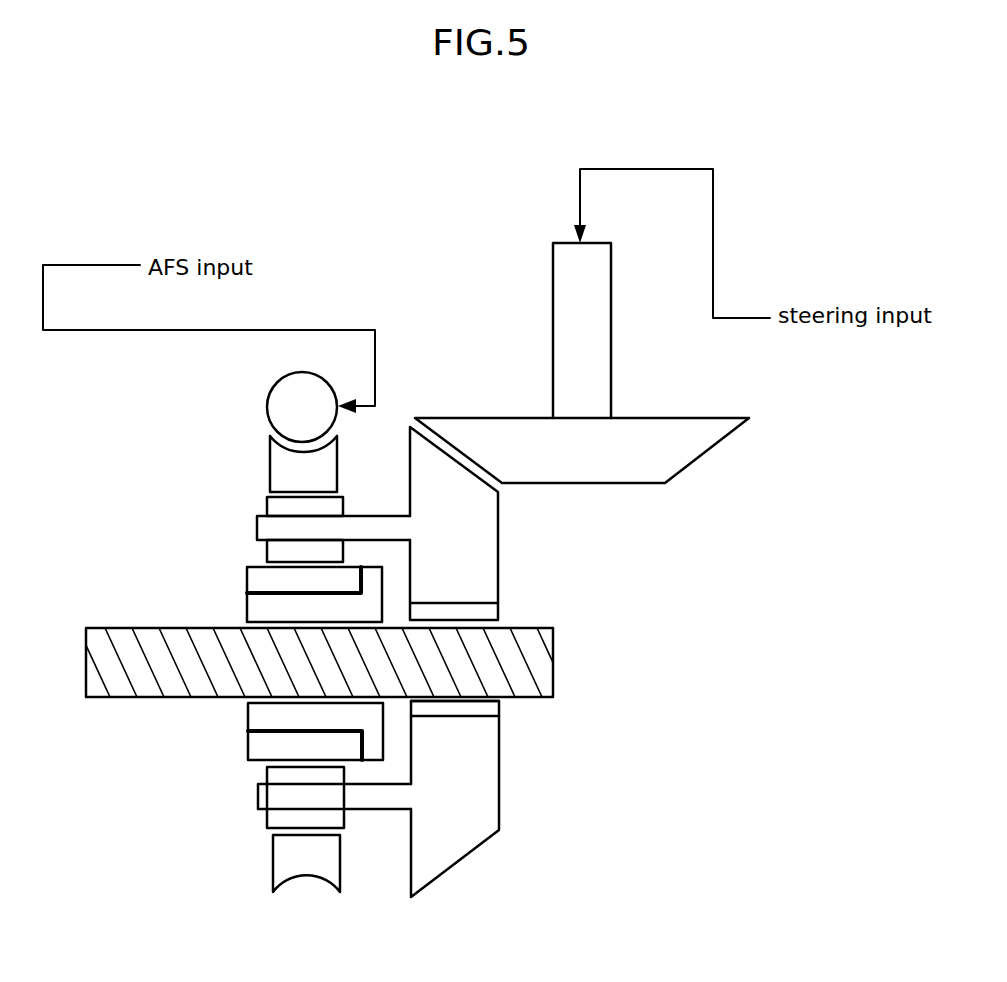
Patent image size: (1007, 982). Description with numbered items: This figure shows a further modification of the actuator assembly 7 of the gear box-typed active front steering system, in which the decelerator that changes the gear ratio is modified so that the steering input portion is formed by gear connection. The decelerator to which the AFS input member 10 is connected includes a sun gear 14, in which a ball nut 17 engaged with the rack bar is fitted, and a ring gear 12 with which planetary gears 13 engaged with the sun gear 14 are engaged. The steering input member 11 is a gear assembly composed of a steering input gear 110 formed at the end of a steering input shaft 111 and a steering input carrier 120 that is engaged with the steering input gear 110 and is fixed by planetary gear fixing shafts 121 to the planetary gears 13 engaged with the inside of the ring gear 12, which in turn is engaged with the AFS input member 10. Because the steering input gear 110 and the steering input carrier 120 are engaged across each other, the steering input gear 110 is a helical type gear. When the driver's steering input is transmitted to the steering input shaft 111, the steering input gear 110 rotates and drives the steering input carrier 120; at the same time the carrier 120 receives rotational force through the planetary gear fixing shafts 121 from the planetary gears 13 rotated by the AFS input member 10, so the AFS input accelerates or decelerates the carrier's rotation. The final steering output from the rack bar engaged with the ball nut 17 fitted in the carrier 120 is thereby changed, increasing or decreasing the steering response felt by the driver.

The actuator assembly 7 is at (491, 535).
The AFS input member 10 is at (277, 403).
The steering input member 11 is at (648, 570).
The ring gear 12 is at (278, 462).
The planetary gears 13 is at (273, 550).
The sun gear 14 is at (260, 748).
The ball nut 17 is at (260, 716).
The steering input gear 110 is at (687, 453).
The steering input shaft 111 is at (607, 367).
The steering input carrier 120 is at (487, 537).
The planetary gear fixing shafts 121 is at (392, 530).